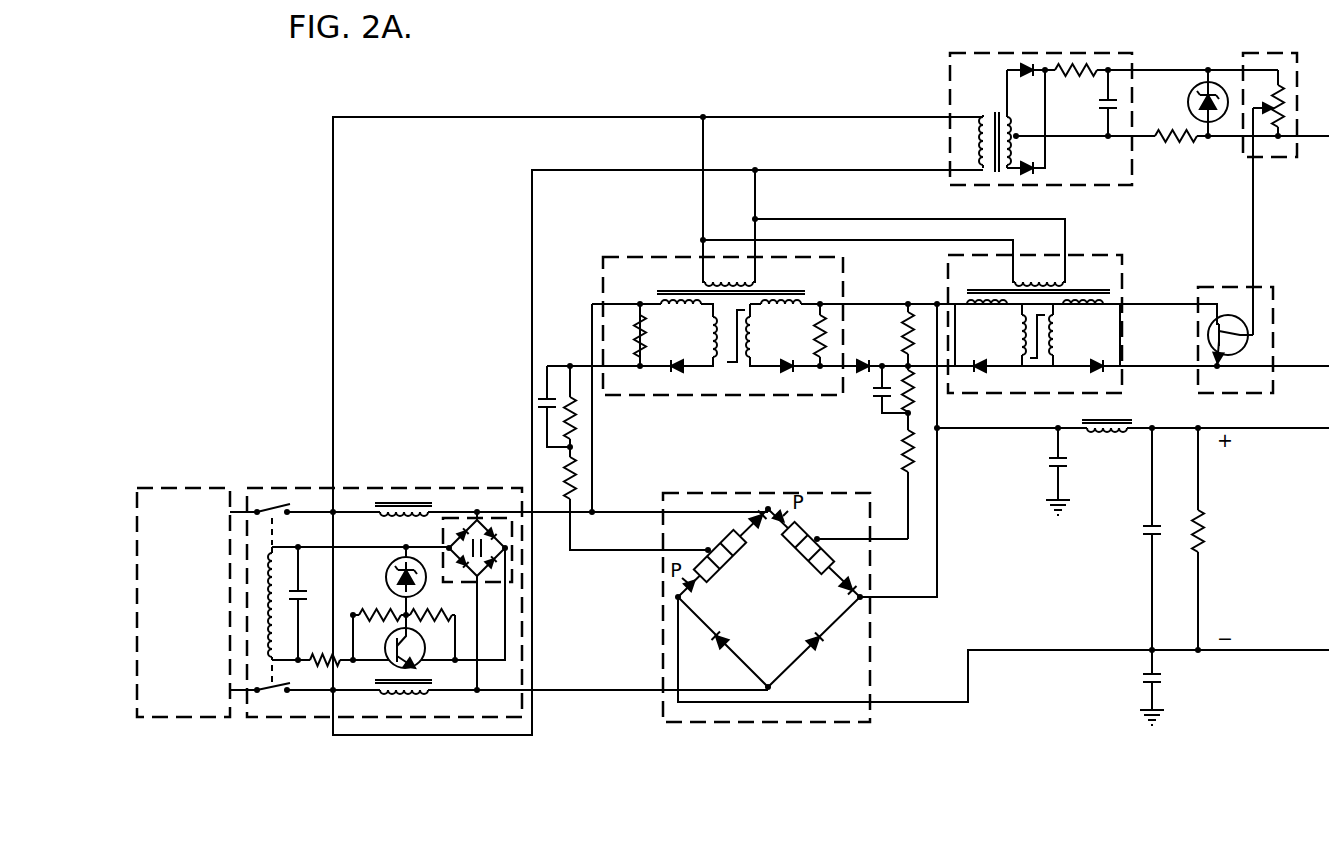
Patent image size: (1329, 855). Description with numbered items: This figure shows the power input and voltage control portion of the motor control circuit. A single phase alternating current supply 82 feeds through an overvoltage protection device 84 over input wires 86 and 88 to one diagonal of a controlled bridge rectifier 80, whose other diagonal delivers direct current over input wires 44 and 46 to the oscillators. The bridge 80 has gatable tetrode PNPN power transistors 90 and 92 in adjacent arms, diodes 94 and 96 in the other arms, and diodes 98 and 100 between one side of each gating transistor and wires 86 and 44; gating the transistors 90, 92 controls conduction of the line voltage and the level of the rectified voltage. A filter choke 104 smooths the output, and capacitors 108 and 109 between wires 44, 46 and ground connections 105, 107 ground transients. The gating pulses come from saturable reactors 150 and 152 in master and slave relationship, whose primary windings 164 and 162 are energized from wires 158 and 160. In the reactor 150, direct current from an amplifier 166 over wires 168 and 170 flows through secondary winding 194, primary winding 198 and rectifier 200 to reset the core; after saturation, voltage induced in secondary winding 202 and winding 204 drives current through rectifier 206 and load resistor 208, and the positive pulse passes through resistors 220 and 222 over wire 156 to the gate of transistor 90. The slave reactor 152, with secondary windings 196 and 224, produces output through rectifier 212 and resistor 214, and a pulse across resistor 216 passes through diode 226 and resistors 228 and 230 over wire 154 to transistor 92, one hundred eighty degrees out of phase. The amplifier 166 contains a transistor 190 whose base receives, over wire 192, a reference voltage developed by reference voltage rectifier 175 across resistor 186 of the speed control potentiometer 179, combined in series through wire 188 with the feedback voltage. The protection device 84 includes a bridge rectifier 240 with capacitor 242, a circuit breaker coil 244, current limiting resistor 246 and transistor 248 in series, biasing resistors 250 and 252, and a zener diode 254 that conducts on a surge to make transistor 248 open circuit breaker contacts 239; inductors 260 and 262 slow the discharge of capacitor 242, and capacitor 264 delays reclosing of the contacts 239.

The input wire 44 is at (902, 598).
The input wire 46 is at (905, 700).
The controlled bridge rectifier 80 is at (719, 493).
The single phase alternating current supply 82 is at (183, 489).
The overvoltage protection device 84 is at (303, 489).
The input wire 86 is at (548, 513).
The input wire 88 is at (570, 690).
The gatable tetrode PNPN power transistor 90 is at (808, 558).
The gatable tetrode PNPN power transistor 92 is at (728, 565).
The diode 94 is at (722, 637).
The diode 96 is at (820, 648).
The diode 98 is at (750, 521).
The diode 100 is at (842, 590).
The filter choke 104 is at (1114, 436).
The ground connection 105 is at (1070, 505).
The ground connection 107 is at (1162, 711).
The capacitor 108 is at (1050, 463).
The capacitor 109 is at (1143, 681).
The saturable reactor 150 is at (1102, 255).
The saturable reactor 152 is at (845, 283).
The wire 154 is at (588, 553).
The wire 156 is at (908, 535).
The wire 158 is at (337, 280).
The wire 160 is at (530, 208).
The primary winding 162 is at (750, 282).
The primary winding 164 is at (1055, 282).
The amplifier 166 is at (1274, 292).
The wire 168 is at (1180, 304).
The wire 170 is at (1192, 364).
The reference voltage rectifier 175 is at (1101, 55).
The speed control potentiometer 179 is at (1258, 54).
The resistor 186 is at (1271, 100).
The wire 188 is at (1315, 142).
The transistor 190 is at (1230, 328).
The wire 192 is at (1256, 220).
The secondary winding 194 is at (1097, 307).
The secondary winding 196 is at (766, 308).
The primary winding 198 is at (1076, 335).
The rectifier 200 is at (1095, 365).
The secondary winding 202 is at (982, 316).
The winding 204 is at (1017, 333).
The rectifier 206 is at (987, 370).
The load resistor 208 is at (905, 337).
The rectifier 212 is at (863, 360).
The resistor 214 is at (817, 337).
The resistor 216 is at (688, 337).
The resistor 220 is at (915, 395).
The resistor 222 is at (905, 449).
The secondary winding 224 is at (680, 308).
The diode 226 is at (673, 373).
The resistor 228 is at (577, 422).
The resistor 230 is at (576, 473).
The circuit breaker contacts 239 is at (272, 509).
The bridge rectifier 240 is at (450, 548).
The capacitor 242 is at (478, 516).
The circuit breaker coil 244 is at (275, 573).
The current limiting resistor 246 is at (333, 648).
The transistor 248 is at (422, 643).
The biasing resistor 250 is at (438, 614).
The biasing resistor 252 is at (378, 636).
The zener diode 254 is at (386, 572).
The inductor 260 is at (397, 518).
The inductor 262 is at (415, 693).
The capacitor 264 is at (305, 593).